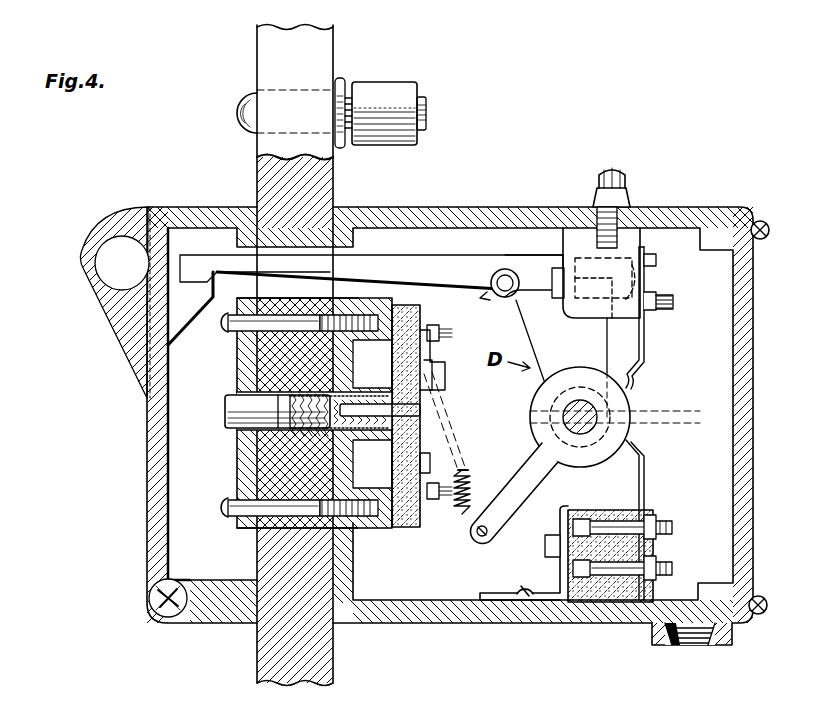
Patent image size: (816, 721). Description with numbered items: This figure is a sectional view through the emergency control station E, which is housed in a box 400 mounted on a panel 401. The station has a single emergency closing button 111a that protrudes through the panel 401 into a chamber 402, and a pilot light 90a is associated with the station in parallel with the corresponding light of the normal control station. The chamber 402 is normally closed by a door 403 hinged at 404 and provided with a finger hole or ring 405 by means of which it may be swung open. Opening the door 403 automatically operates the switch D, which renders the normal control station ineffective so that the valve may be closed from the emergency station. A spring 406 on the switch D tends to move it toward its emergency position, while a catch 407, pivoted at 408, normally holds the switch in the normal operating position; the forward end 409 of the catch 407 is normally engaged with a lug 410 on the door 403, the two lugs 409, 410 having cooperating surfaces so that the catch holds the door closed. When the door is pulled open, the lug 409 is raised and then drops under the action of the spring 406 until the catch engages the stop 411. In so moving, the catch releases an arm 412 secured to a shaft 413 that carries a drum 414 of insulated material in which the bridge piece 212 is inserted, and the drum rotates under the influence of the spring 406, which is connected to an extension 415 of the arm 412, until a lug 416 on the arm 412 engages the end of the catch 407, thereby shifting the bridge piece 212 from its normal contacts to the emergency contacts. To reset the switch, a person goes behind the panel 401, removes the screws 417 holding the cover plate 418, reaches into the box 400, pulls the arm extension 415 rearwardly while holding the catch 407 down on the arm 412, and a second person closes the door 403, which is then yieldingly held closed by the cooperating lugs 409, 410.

The pilot light 90a is at (245, 113).
The emergency closing button 111a is at (240, 398).
The bridge piece 212 is at (630, 406).
The box 400 is at (430, 603).
The panel 401 is at (335, 647).
The chamber 402 is at (178, 497).
The door 403 is at (115, 312).
The hinge 404 is at (160, 612).
The finger hole or ring 405 is at (108, 268).
The spring 406 is at (463, 470).
The catch 407 is at (592, 272).
The pivot 408 is at (492, 282).
The forward end or lug of the catch 409 is at (207, 248).
The lug on the door 410 is at (190, 308).
The stop 411 is at (620, 240).
The arm 412 is at (597, 340).
The shaft 413 is at (600, 425).
The drum 414 is at (535, 398).
The extension of the arm 415 is at (535, 480).
The lug on the arm 416 is at (520, 306).
The screws 417 is at (760, 221).
The cover plate 418 is at (600, 535).